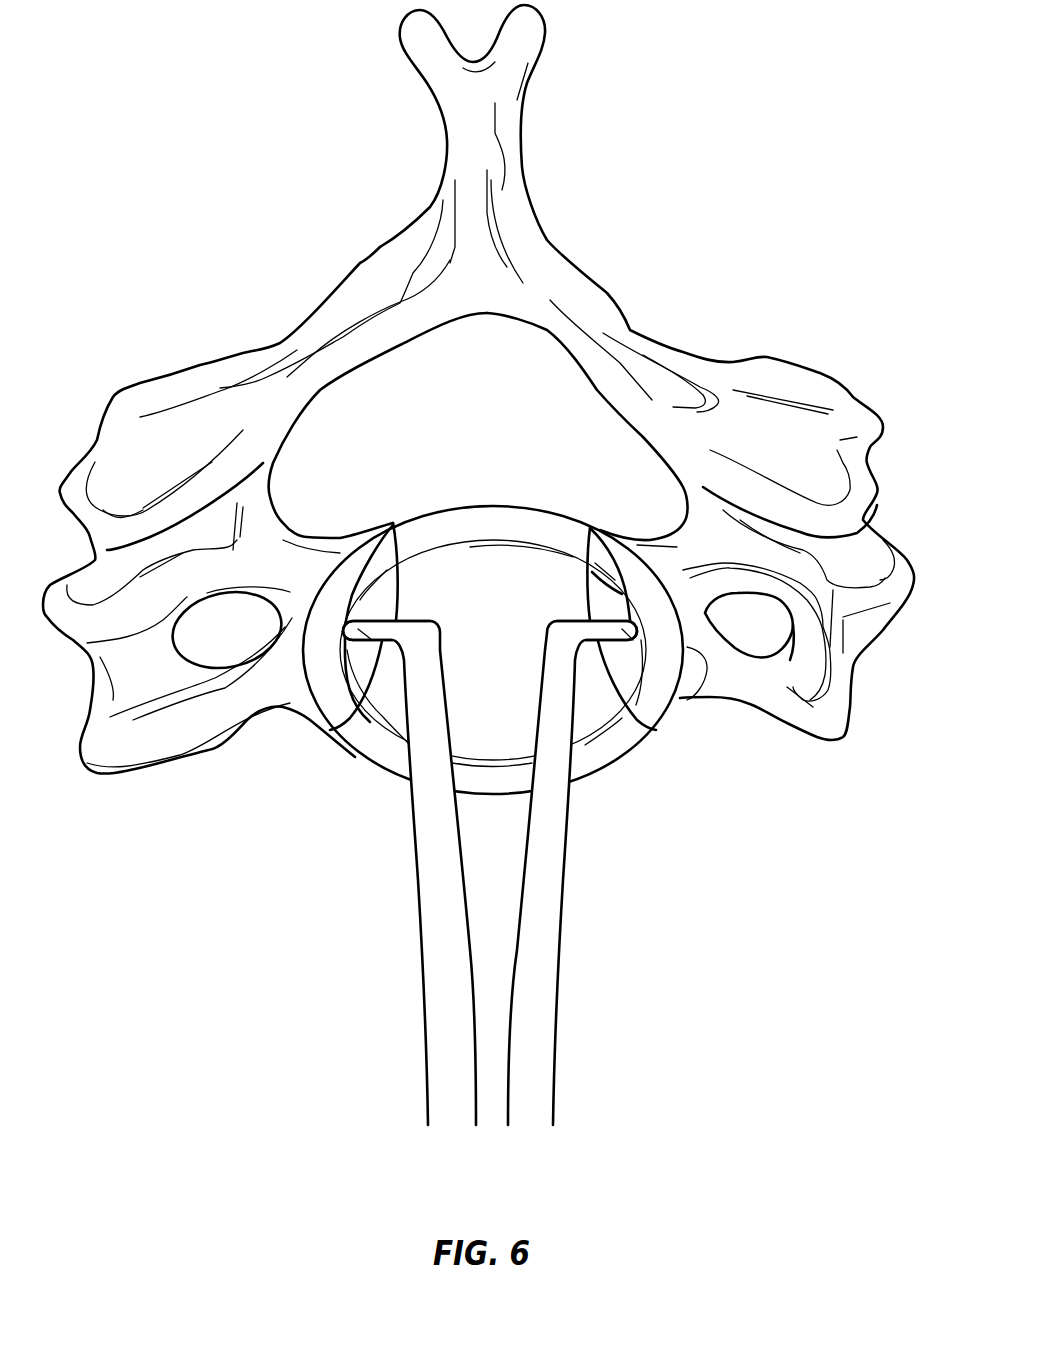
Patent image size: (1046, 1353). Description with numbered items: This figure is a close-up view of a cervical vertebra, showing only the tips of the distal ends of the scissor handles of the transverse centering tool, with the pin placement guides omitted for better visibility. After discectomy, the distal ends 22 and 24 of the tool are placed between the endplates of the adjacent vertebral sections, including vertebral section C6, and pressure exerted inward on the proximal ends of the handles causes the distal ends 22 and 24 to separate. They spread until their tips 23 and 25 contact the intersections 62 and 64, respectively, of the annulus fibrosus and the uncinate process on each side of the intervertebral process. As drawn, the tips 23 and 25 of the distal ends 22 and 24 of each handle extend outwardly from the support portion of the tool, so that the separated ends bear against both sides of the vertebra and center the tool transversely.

The distal end 22 is at (557, 783).
The tip 23 is at (627, 633).
The distal end 24 is at (430, 753).
The tip 25 is at (363, 633).
The intersection of the annulus fibrosus and the uncinate process 62 is at (598, 621).
The intersection of the annulus fibrosus and the uncinate process 64 is at (390, 621).
The vertebral section C6 is at (623, 740).